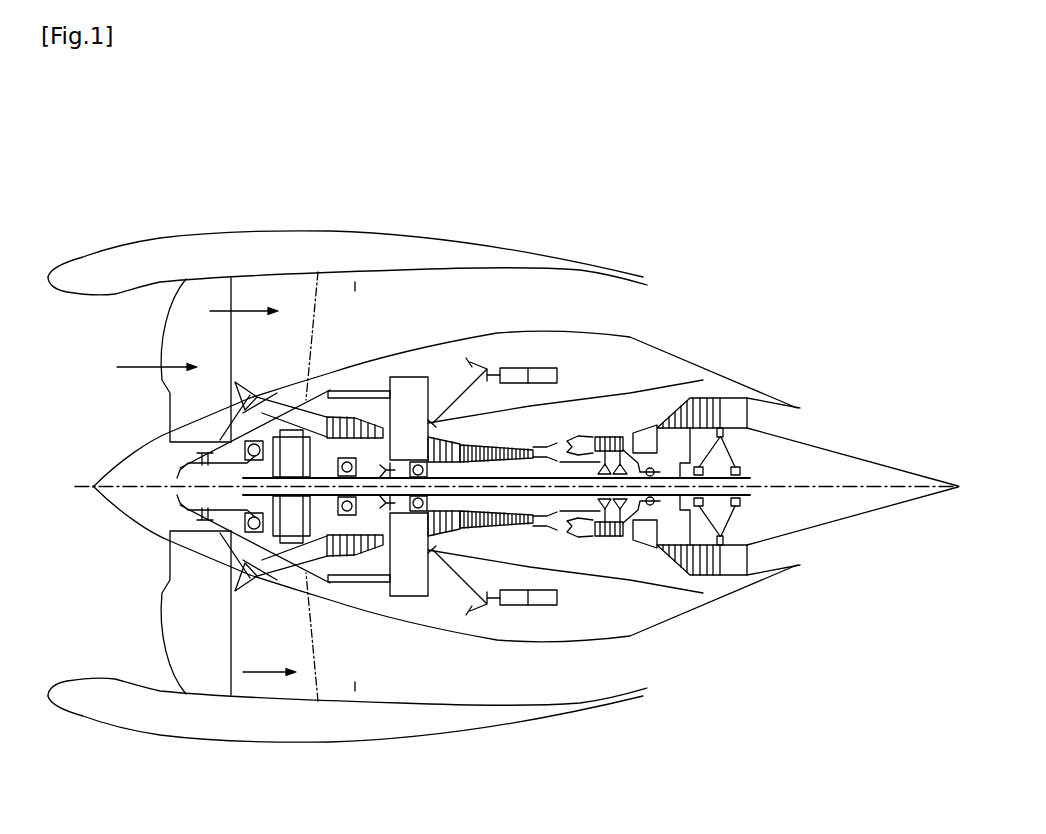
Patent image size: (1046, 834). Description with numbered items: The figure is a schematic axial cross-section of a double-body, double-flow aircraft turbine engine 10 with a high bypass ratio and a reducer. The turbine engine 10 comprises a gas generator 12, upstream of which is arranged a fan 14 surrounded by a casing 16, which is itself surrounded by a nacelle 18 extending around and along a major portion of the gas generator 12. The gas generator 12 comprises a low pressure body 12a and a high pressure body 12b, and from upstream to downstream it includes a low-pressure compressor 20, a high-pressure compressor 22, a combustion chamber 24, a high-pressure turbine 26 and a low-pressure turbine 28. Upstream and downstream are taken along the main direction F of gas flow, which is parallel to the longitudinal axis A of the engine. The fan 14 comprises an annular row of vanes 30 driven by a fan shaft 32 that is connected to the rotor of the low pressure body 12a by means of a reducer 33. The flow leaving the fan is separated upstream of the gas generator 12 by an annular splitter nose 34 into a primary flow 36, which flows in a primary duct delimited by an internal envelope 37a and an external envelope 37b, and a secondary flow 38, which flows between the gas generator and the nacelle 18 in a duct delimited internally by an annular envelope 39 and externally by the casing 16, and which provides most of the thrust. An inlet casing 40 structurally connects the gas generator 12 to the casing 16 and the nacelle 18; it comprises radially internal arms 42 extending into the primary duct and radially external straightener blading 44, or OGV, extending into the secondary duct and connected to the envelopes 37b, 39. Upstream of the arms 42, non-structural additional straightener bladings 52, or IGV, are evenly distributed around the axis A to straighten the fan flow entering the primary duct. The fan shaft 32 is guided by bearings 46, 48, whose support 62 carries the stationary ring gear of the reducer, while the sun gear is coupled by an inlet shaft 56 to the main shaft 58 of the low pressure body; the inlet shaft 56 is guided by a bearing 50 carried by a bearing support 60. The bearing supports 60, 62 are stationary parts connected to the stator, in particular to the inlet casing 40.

The turbine engine 10 is at (790, 261).
The gas generator 12 is at (421, 352).
The low pressure body 12a is at (363, 530).
The high pressure body 12b is at (540, 542).
The fan 14 is at (160, 660).
The casing 16 is at (207, 697).
The nacelle 18 is at (140, 253).
The low-pressure compressor 20 is at (407, 530).
The high-pressure compressor 22 is at (477, 530).
The combustion chamber 24 is at (583, 438).
The high-pressure turbine 26 is at (607, 432).
The low-pressure turbine 28 is at (700, 398).
The vanes 30 is at (208, 290).
The fan shaft 32 is at (177, 478).
The reducer 33 is at (290, 565).
The annular splitter nose 34 is at (243, 603).
The primary flow 36 is at (248, 587).
The internal annular envelope 37a is at (343, 572).
The external annular envelope 37b is at (303, 352).
The secondary flow 38 is at (283, 410).
The annular envelope 39 is at (467, 335).
The inlet casing 40 is at (251, 302).
The radially internal arms 42 is at (338, 560).
The straightener blading 44 is at (323, 387).
The bearing 46 is at (195, 509).
The bearing 48 is at (243, 521).
The bearing 50 is at (363, 530).
The additional straightener bladings 52 is at (243, 397).
The inlet shaft 56 is at (265, 398).
The main shaft 58 is at (520, 477).
The bearing support 60 is at (363, 397).
The support 62 is at (250, 580).
The main direction of gas flow F is at (143, 362).
The longitudinal axis A is at (873, 486).